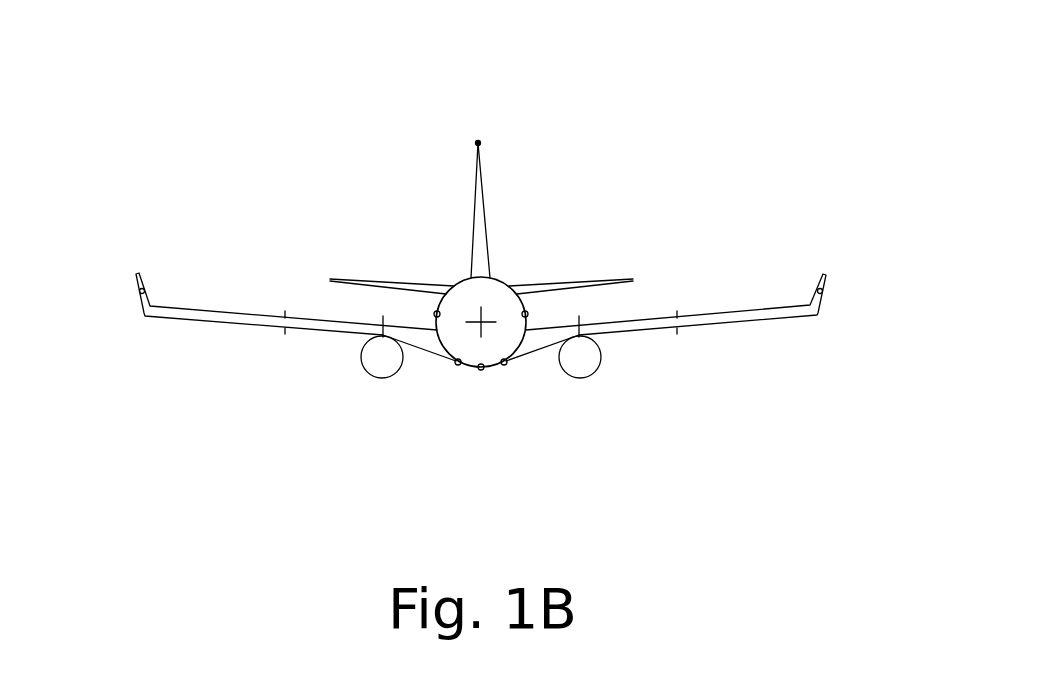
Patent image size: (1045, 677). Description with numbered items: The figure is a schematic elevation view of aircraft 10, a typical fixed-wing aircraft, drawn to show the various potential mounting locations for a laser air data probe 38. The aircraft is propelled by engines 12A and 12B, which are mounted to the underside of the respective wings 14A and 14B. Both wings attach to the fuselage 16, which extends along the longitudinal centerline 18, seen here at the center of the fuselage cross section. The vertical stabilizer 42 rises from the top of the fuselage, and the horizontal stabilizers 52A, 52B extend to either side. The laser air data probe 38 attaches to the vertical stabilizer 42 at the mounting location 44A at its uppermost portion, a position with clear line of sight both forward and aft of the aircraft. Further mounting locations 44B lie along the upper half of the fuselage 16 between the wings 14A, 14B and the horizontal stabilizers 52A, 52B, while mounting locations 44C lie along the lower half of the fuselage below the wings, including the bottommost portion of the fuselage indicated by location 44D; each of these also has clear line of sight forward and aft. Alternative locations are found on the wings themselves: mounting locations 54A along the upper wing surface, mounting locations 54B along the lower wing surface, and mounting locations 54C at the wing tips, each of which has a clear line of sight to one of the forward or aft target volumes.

The aircraft 10 is at (817, 57).
The engine 12A is at (372, 377).
The engine 12B is at (592, 372).
The wing 14A is at (202, 308).
The wing 14B is at (740, 310).
The fuselage 16 is at (458, 282).
The longitudinal centerline 18 is at (484, 318).
The laser air data probe 38 is at (542, 118).
The vertical stabilizer 42 is at (481, 190).
The mounting location 44A is at (479, 141).
The mounting locations 44B is at (434, 313).
The mounting locations 44C is at (457, 365).
The mounting location 44D is at (482, 370).
The horizontal stabilizer 52A is at (378, 281).
The horizontal stabilizer 52B is at (574, 282).
The mounting locations 54A is at (285, 313).
The mounting locations 54B is at (677, 313).
The mounting locations 54C is at (139, 292).